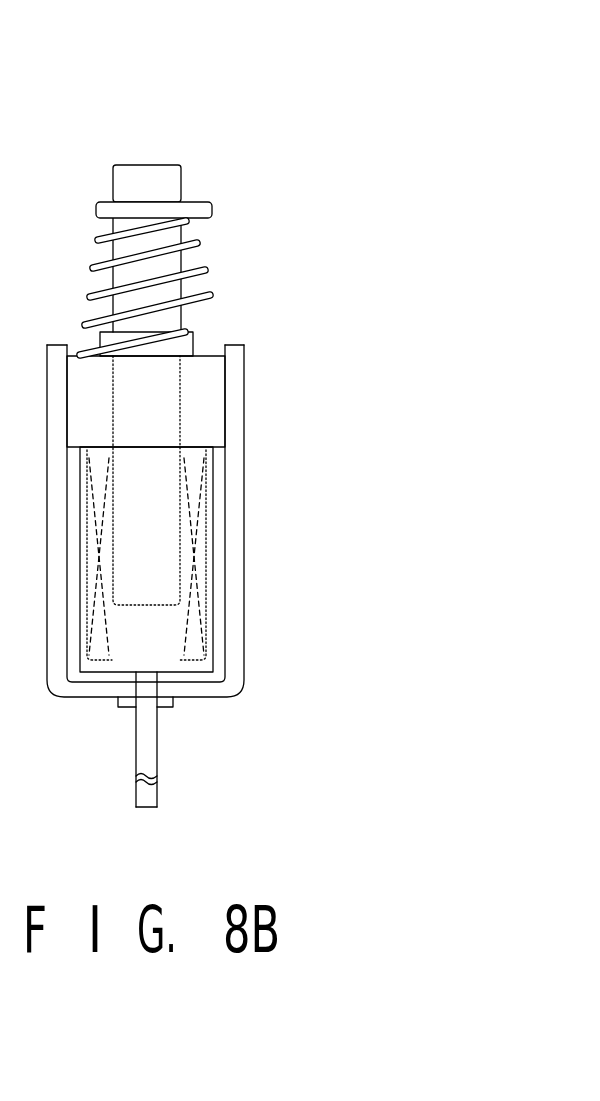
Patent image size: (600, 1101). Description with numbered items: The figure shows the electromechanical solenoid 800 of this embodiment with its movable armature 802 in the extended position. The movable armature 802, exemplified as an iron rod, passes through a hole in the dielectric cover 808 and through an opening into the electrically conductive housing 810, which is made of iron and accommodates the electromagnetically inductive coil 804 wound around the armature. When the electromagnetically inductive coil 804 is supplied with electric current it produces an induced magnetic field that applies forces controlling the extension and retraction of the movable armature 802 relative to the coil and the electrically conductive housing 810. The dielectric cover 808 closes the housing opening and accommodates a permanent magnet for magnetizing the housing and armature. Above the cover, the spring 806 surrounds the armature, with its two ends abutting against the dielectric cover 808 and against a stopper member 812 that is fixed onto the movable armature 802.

The electromechanical solenoid 800 is at (152, 105).
The movable armature 802 is at (153, 183).
The electromagnetically inductive coil 804 is at (200, 535).
The spring 806 is at (197, 245).
The dielectric cover 808 is at (207, 415).
The electrically conductive housing 810 is at (235, 360).
The stopper member 812 is at (205, 212).